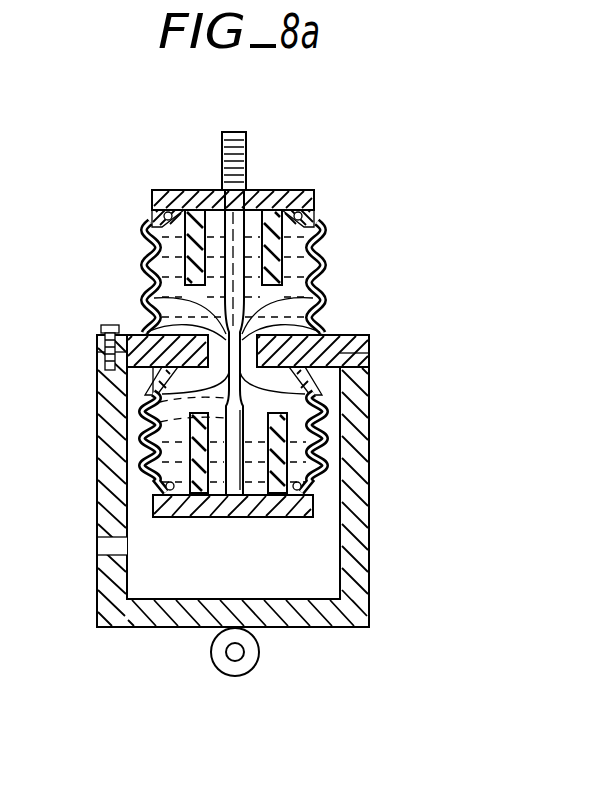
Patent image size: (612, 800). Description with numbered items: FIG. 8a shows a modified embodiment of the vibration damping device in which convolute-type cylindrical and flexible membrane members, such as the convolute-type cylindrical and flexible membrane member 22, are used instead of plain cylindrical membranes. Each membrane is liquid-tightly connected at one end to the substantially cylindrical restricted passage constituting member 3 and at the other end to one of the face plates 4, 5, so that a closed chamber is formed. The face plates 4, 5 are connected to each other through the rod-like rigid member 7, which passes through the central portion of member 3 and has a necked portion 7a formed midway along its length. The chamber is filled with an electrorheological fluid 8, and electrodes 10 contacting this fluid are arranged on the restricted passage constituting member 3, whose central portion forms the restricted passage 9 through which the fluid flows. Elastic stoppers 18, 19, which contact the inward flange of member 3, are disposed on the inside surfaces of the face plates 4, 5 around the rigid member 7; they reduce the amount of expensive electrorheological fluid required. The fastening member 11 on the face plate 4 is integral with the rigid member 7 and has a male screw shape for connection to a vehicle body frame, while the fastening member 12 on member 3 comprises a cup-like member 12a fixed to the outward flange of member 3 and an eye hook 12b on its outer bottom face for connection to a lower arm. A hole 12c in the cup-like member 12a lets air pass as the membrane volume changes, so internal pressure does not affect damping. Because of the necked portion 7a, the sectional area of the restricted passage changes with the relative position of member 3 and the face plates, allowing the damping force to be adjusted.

The restricted passage constituting member 3 is at (333, 326).
The face plate 4 is at (187, 189).
The face plate 5 is at (192, 517).
The rigid member 7 is at (250, 278).
The necked portion 7a is at (300, 392).
The fluid 8 is at (137, 411).
The restricted passage 9 is at (308, 306).
The electrodes 10 is at (146, 298).
The fastening member 11 is at (246, 166).
The fastening member 12 is at (138, 264).
The cup-like member 12a is at (371, 460).
The eye hook 12b is at (257, 658).
The hole 12c is at (97, 546).
The elastic stopper 18 is at (150, 232).
The elastic stopper 19 is at (144, 466).
The convolute-type cylindrical and flexible membrane member 22 is at (138, 442).